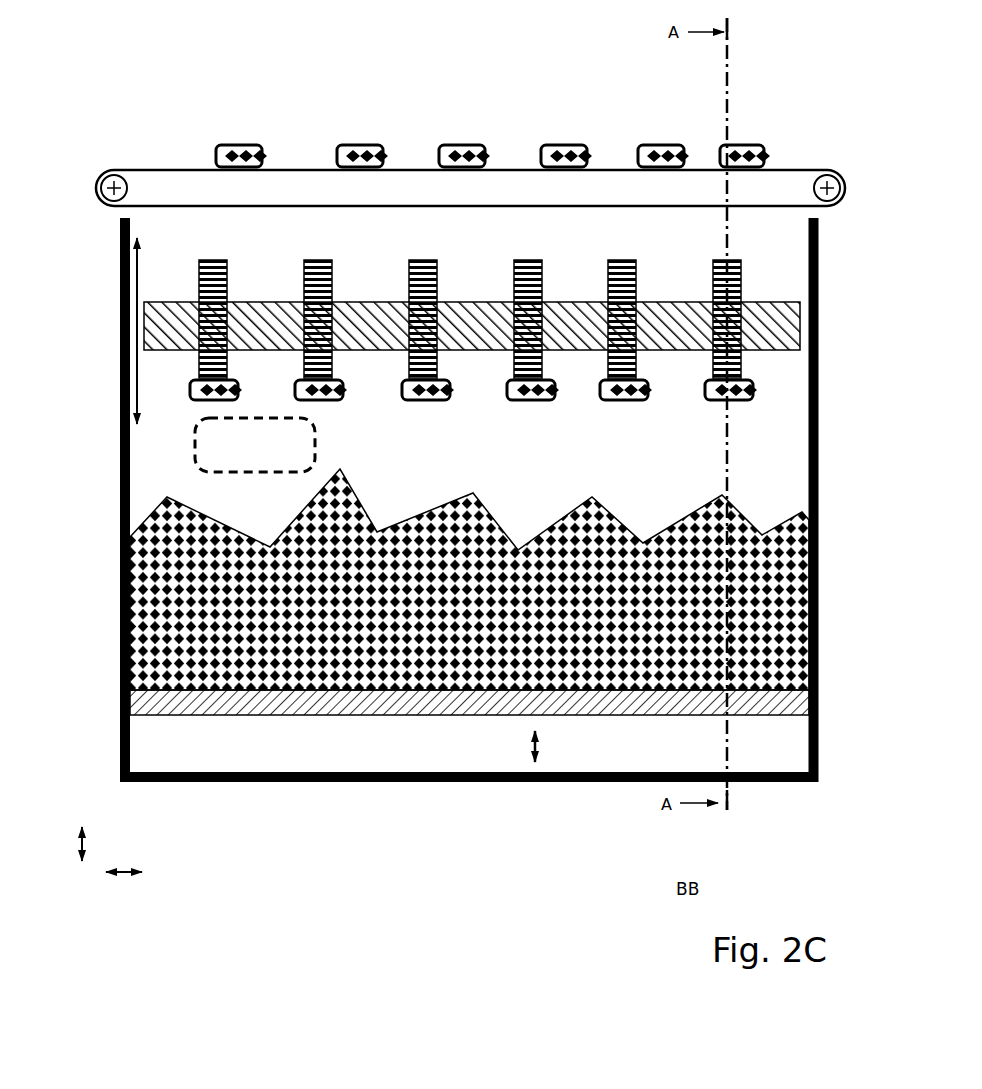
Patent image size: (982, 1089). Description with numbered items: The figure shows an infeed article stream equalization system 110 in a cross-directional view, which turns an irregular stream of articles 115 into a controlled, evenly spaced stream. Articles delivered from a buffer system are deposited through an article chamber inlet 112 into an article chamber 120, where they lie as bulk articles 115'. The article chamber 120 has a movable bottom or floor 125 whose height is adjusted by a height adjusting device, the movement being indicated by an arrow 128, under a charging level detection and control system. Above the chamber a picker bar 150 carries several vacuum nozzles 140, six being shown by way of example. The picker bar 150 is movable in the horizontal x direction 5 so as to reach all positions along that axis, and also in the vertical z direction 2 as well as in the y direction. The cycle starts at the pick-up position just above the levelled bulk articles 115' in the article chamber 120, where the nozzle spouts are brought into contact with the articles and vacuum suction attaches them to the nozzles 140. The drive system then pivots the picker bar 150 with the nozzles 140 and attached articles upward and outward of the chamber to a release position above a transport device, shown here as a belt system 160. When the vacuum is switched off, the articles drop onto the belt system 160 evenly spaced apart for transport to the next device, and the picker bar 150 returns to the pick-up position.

The infeed article stream equalization system 110 is at (2, 100).
The belt system 160 is at (157, 172).
The picker bar 150 is at (170, 300).
The vacuum nozzles 140 is at (713, 272).
The bulk articles 115' is at (545, 407).
The articles 115 is at (424, 579).
The article chamber inlet 112 is at (191, 436).
The article chamber 120 is at (162, 648).
The movable bottom or floor 125 is at (320, 706).
The arrow indicating floor movement 128 is at (522, 747).
The x direction 5 is at (135, 266).
The z direction 2 is at (92, 844).